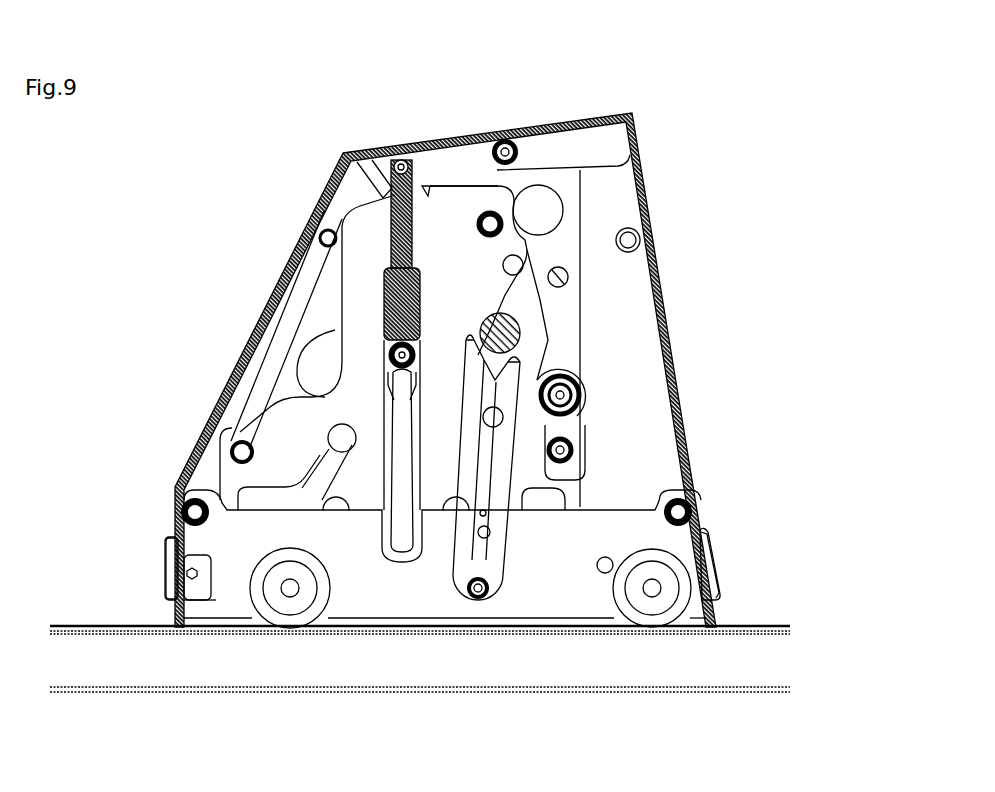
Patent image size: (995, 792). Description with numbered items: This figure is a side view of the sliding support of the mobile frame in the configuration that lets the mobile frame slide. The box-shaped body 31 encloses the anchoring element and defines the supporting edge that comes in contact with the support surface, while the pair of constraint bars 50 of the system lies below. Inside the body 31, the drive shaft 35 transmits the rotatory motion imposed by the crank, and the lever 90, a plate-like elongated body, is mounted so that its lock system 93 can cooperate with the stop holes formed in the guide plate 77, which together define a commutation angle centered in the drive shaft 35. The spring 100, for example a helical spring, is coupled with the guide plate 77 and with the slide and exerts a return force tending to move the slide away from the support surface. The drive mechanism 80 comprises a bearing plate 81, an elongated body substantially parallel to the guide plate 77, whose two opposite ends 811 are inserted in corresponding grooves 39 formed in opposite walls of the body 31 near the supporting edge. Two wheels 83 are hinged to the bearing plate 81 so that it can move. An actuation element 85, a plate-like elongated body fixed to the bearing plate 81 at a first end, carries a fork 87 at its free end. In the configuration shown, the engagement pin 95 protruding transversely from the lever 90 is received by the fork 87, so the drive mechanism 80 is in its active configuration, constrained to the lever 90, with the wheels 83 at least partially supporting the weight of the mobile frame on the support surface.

The body 31 is at (342, 158).
The drive shaft 35 is at (518, 360).
The grooves 39 is at (148, 536).
The constraint bars 50 is at (118, 699).
The guide plates 77 is at (293, 343).
The drive mechanism 80 is at (385, 606).
The bearing plate 81 is at (230, 590).
The opposite ends 811 is at (165, 570).
The wheels 83 is at (664, 623).
The actuation element 85 is at (483, 608).
The fork 87 is at (517, 388).
The lever 90 is at (509, 288).
The lock system 93 is at (577, 393).
The engagement pin 95 is at (495, 428).
The spring 100 is at (405, 218).